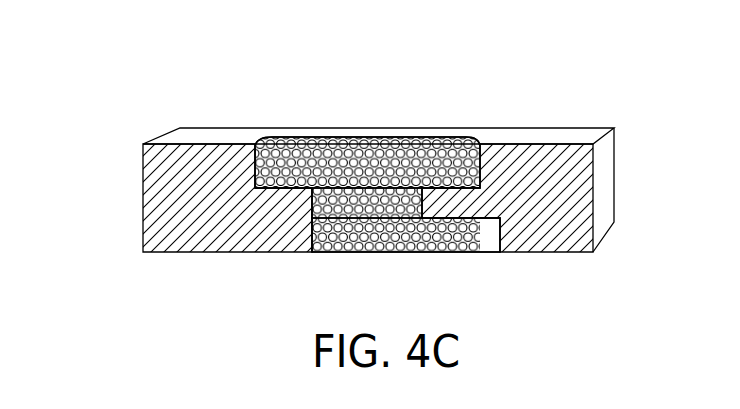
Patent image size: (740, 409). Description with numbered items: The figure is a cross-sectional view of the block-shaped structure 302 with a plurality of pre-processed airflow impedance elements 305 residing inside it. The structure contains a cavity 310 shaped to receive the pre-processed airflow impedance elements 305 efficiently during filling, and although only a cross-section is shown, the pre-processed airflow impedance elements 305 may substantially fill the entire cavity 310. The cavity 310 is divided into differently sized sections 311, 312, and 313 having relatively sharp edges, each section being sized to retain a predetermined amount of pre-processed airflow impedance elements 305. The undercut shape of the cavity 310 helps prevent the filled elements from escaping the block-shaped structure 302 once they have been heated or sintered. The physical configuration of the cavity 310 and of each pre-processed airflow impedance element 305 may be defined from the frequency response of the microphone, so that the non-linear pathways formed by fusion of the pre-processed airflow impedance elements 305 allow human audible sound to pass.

The block-shaped structure 302 is at (150, 86).
The pre-processed airflow impedance elements 305 is at (483, 248).
The cavity 310 is at (482, 125).
The section of cavity 311 is at (317, 243).
The section of cavity 312 is at (373, 238).
The section of cavity 313 is at (258, 146).